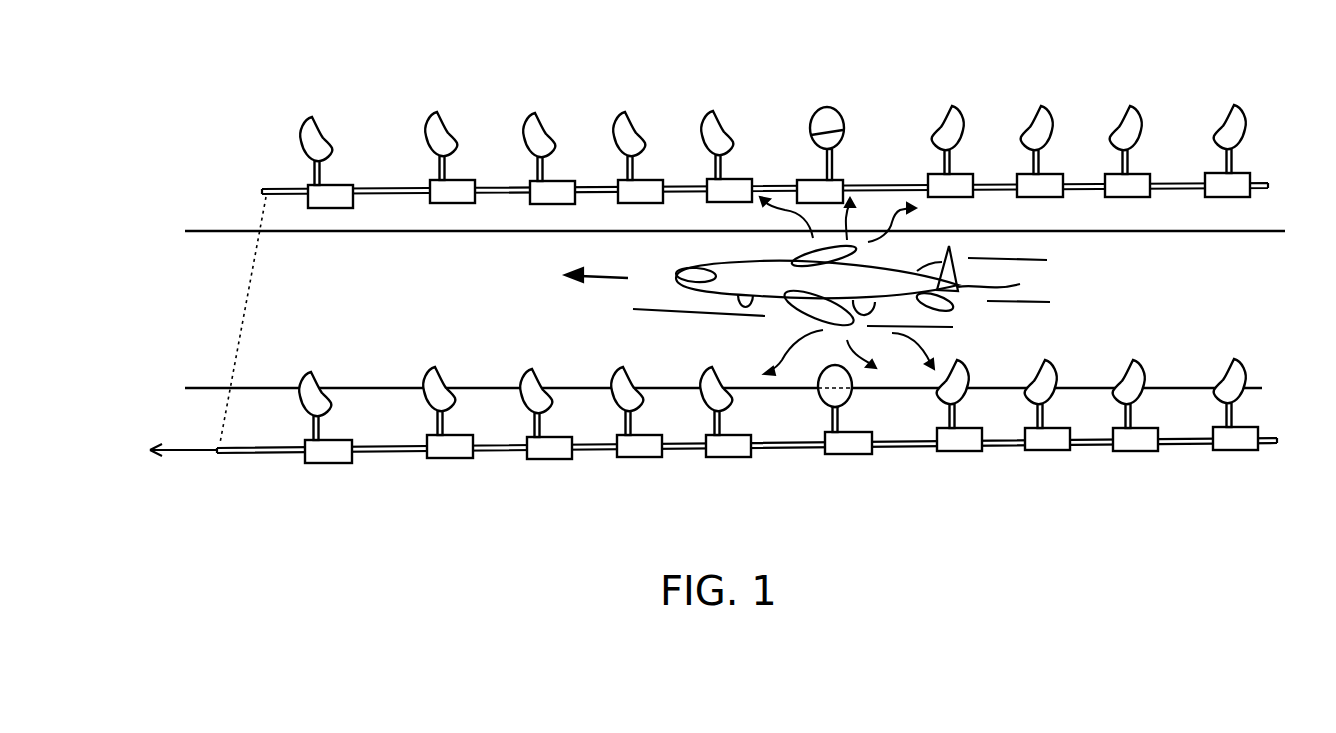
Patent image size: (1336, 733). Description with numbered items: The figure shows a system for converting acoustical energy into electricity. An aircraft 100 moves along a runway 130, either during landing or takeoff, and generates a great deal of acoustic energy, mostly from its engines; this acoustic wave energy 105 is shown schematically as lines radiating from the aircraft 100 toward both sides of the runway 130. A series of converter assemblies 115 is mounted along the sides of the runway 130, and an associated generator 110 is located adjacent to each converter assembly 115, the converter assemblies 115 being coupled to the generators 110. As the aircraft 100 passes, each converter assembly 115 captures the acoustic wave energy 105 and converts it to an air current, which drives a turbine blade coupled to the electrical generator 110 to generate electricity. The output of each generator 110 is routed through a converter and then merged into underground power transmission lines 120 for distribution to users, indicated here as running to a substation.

The aircraft 100 is at (960, 283).
The acoustic wave energy 105 is at (893, 205).
The generator 110 is at (556, 181).
The converter assembly 115 is at (323, 128).
The underground power transmission lines 120 is at (264, 186).
The runway 130 is at (1187, 232).